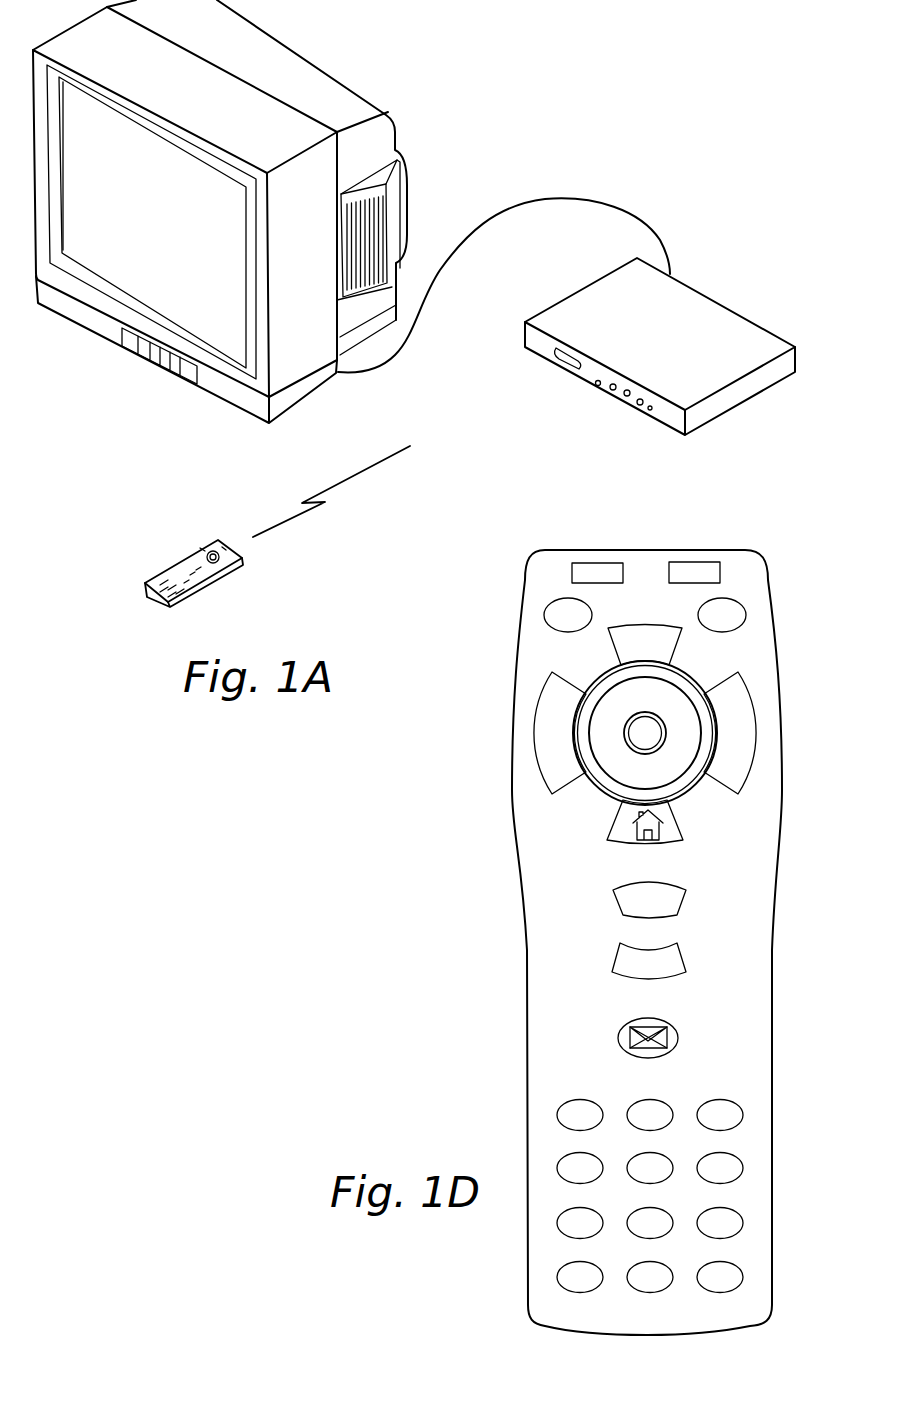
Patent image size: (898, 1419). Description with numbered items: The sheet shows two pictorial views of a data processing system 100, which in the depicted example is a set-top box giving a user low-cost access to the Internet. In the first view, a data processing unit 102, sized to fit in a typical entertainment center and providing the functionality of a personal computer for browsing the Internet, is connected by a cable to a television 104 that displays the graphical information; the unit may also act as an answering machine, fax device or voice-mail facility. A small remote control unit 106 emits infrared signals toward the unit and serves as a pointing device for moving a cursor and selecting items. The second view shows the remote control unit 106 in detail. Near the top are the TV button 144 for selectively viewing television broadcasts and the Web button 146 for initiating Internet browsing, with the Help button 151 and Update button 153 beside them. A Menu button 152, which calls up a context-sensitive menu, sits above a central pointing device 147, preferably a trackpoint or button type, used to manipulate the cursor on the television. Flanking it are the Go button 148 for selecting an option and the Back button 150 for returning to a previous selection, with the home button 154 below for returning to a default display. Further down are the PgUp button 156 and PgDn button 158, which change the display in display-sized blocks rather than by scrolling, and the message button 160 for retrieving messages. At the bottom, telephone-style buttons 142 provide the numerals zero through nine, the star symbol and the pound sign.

In FIG. 1A, the data processing system 100 is at (528, 460).
In FIG. 1A, the data processing unit 102 is at (732, 308).
In FIG. 1A, the television 104 is at (368, 83).
In FIG. 1A, the remote control unit 106 is at (170, 572).
In FIG. 1D, the remote control unit 106 is at (773, 1063).
In FIG. 1D, the buttons 142 is at (780, 1088).
In FIG. 1D, the TV button 144 is at (597, 563).
In FIG. 1D, the Web button 146 is at (694, 562).
In FIG. 1D, the pointing device 147 is at (663, 732).
In FIG. 1D, the Go button 148 is at (738, 792).
In FIG. 1D, the Back button 150 is at (562, 792).
In FIG. 1D, the Help button 151 is at (544, 613).
In FIG. 1D, the Menu button 152 is at (655, 625).
In FIG. 1D, the Update button 153 is at (749, 616).
In FIG. 1D, the home button 154 is at (677, 847).
In FIG. 1D, the PgUp button 156 is at (677, 900).
In FIG. 1D, the PgDn button 158 is at (667, 977).
In FIG. 1D, the message button 160 is at (678, 1038).